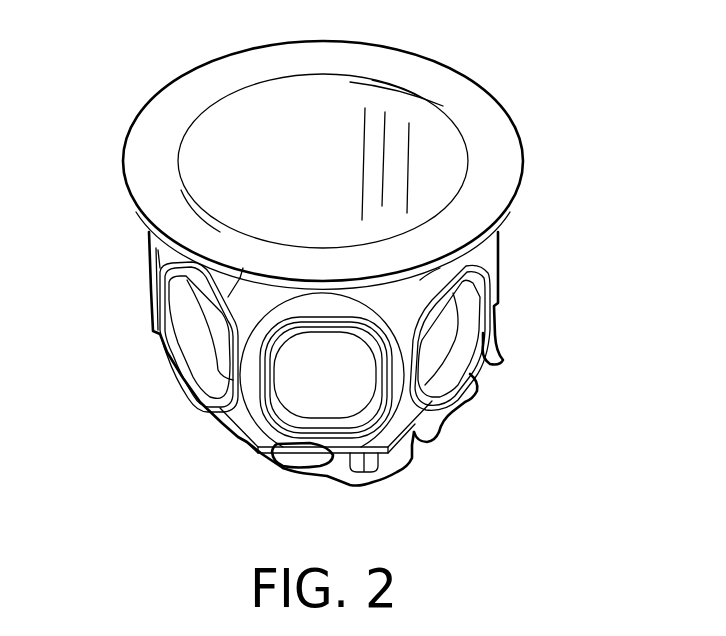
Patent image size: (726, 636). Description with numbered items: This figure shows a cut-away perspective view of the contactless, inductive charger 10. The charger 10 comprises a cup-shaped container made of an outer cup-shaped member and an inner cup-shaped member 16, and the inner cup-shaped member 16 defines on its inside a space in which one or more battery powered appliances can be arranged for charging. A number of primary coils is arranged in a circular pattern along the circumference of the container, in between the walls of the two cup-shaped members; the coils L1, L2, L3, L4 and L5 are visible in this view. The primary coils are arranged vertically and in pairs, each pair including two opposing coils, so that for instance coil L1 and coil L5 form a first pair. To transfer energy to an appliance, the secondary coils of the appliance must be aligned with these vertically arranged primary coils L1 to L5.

The contactless, inductive charger 10 is at (172, 440).
The inner cup-shaped member 16 is at (409, 72).
The primary coil L1 is at (154, 250).
The primary coil L2 is at (172, 368).
The primary coil L3 is at (242, 441).
The primary coil L4 is at (471, 384).
The primary coil L5 is at (499, 270).